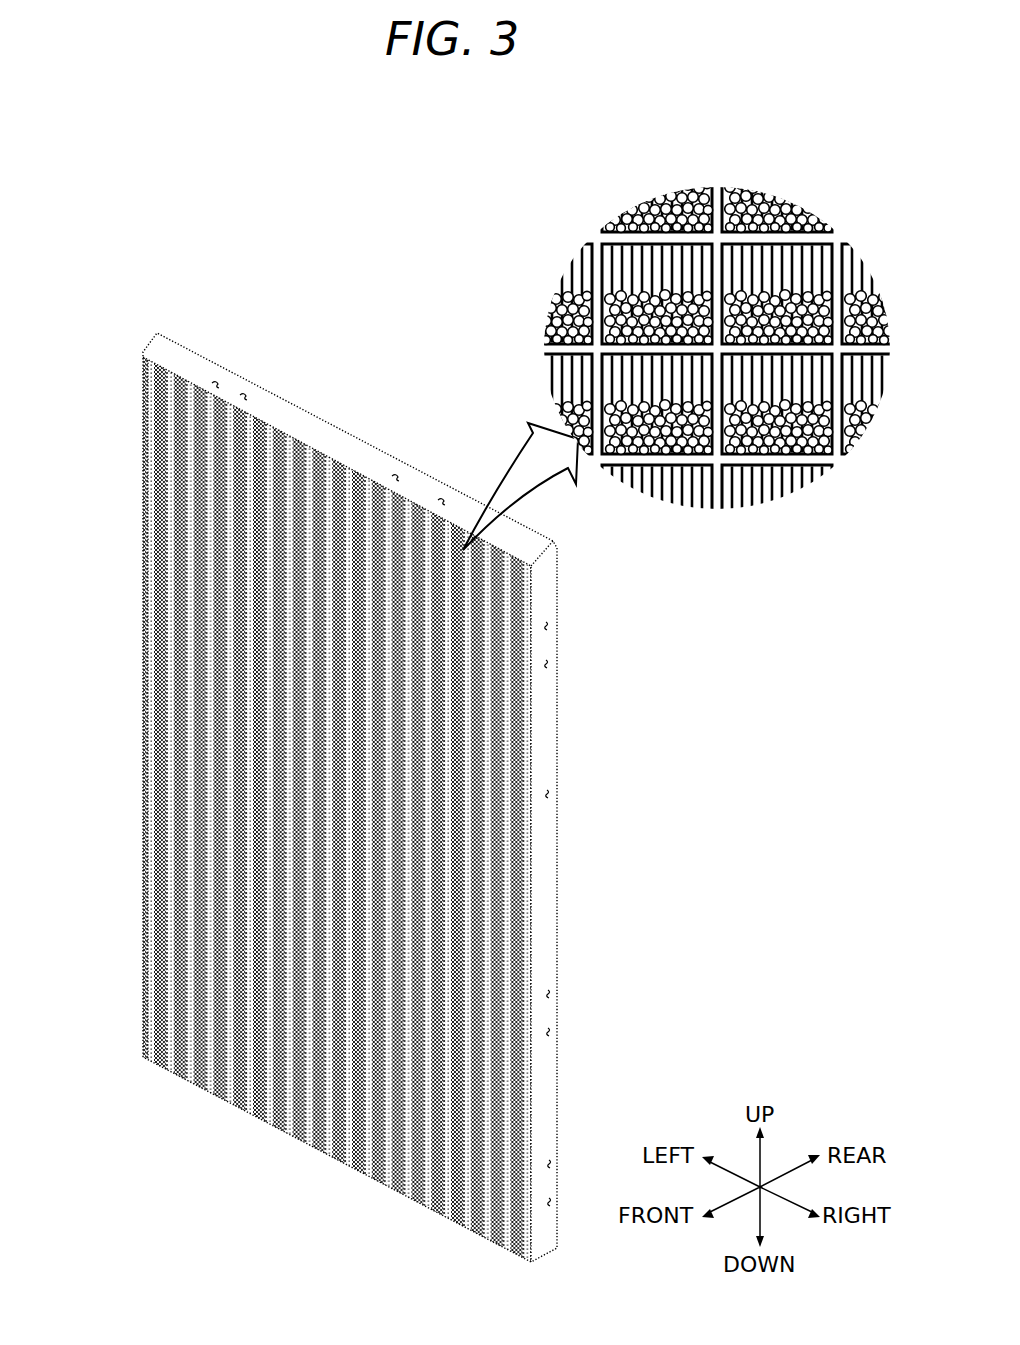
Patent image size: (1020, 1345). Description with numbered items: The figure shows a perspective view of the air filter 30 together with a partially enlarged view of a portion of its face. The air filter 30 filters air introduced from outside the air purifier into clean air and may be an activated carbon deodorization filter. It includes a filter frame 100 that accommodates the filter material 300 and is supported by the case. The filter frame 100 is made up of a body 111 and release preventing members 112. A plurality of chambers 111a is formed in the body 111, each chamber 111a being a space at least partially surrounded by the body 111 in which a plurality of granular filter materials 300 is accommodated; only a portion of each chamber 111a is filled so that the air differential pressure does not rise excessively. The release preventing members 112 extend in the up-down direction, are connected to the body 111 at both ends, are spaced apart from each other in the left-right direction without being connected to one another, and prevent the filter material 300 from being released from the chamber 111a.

The air filter 30 is at (369, 144).
The filter frame 100 is at (143, 485).
The body 111 is at (612, 237).
The release preventing member 112 is at (612, 273).
The chamber 111a is at (612, 378).
The filter material 300 is at (548, 334).